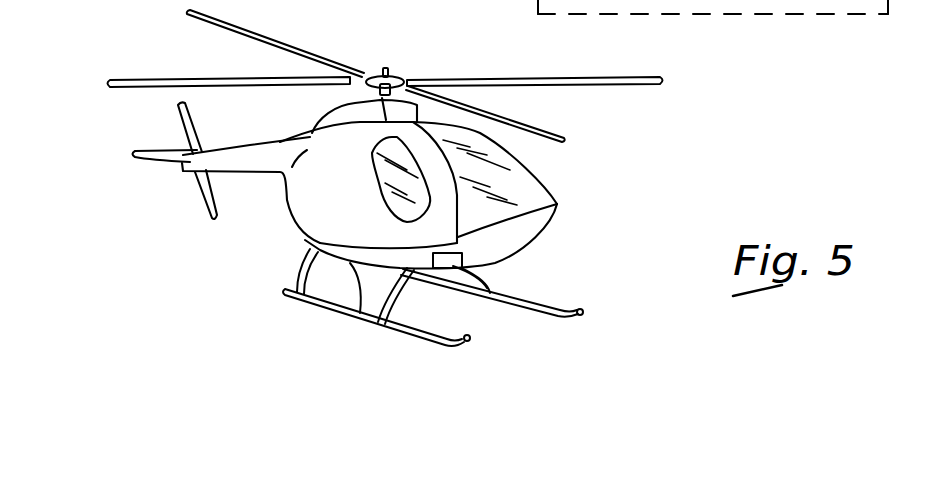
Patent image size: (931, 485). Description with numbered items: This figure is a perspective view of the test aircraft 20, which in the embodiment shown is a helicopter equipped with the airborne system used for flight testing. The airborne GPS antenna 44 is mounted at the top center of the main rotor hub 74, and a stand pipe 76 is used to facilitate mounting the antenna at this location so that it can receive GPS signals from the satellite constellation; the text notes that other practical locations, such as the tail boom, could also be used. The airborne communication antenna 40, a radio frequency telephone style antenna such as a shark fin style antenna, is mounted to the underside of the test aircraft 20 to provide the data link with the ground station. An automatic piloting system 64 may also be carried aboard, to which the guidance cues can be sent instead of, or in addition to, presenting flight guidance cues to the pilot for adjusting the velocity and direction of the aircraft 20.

The test aircraft 20 is at (540, 233).
The airborne communication antenna 40 is at (357, 320).
The airborne GPS antenna 44 is at (382, 72).
The automatic piloting system 64 is at (447, 262).
The main rotor hub 74 is at (372, 75).
The stand pipe 76 is at (390, 72).